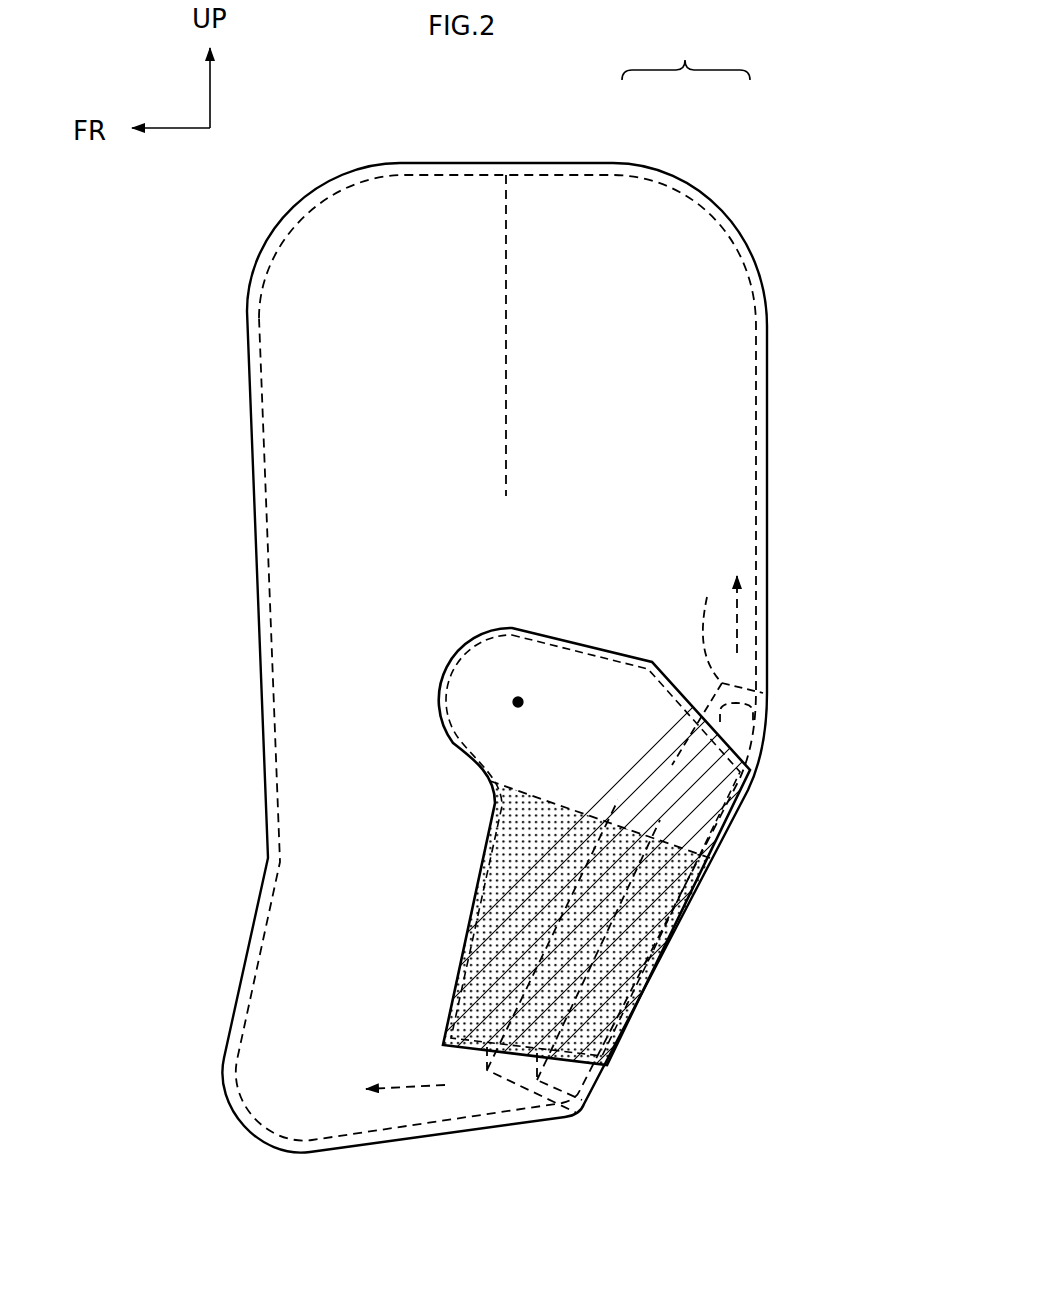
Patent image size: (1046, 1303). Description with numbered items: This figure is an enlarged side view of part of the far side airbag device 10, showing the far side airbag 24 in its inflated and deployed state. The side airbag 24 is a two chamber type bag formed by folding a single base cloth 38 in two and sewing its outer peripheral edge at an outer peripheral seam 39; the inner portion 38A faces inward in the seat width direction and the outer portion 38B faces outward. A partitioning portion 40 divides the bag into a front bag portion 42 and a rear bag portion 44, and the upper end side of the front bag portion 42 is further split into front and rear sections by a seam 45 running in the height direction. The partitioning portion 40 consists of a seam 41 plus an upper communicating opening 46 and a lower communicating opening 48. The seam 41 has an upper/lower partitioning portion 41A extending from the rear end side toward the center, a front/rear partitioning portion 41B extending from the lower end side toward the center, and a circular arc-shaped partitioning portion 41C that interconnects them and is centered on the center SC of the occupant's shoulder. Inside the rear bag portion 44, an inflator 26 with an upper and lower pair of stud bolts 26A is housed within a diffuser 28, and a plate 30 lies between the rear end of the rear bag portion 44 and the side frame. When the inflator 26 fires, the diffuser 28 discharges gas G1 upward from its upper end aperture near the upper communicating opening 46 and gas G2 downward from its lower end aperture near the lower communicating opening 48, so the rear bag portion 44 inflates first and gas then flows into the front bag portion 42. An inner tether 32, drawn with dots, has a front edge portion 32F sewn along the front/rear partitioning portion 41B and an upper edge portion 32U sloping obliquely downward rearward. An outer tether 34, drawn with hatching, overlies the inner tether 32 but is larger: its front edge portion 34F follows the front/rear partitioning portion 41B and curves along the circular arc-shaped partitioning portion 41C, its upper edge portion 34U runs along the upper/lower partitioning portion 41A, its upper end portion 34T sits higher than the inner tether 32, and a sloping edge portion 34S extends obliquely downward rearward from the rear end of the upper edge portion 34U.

The far side airbag device 10 is at (190, 339).
The far side airbag 24 is at (253, 269).
The inflator 26 is at (668, 947).
The stud bolts 26A is at (712, 855).
The diffuser 28 is at (466, 938).
The plate 30 is at (763, 742).
The inner tether 32 is at (532, 781).
The upper edge portion of the inner tether 32U is at (737, 808).
The front edge portion of the inner tether 32F is at (484, 860).
The outer tether 34 is at (476, 629).
The upper end portion of the outer tether 34T is at (513, 628).
The upper edge portion of the outer tether 34U is at (573, 642).
The sloping edge portion 34S is at (686, 698).
The front edge portion of the outer tether 34F is at (493, 818).
The base cloth 38 is at (686, 52).
The inner portion 38A is at (618, 227).
The outer portion 38B is at (677, 228).
The outer peripheral seam 39 is at (398, 175).
The partitioning portion 40 is at (430, 685).
The seam 41 is at (449, 746).
The upper/lower partitioning portion 41A is at (617, 653).
The front/rear partitioning portion 41B is at (460, 968).
The circular arc-shaped partitioning portion 41C is at (441, 668).
The front bag portion 42 is at (312, 527).
The rear bag portion 44 is at (670, 913).
The seam 45 is at (506, 318).
The upper communicating opening 46 is at (722, 592).
The lower communicating opening 48 is at (445, 1063).
The center of the shoulder SC is at (518, 702).
The gas discharged from the upper end aperture G1 is at (738, 627).
The gas discharged from the lower end aperture G2 is at (403, 1092).